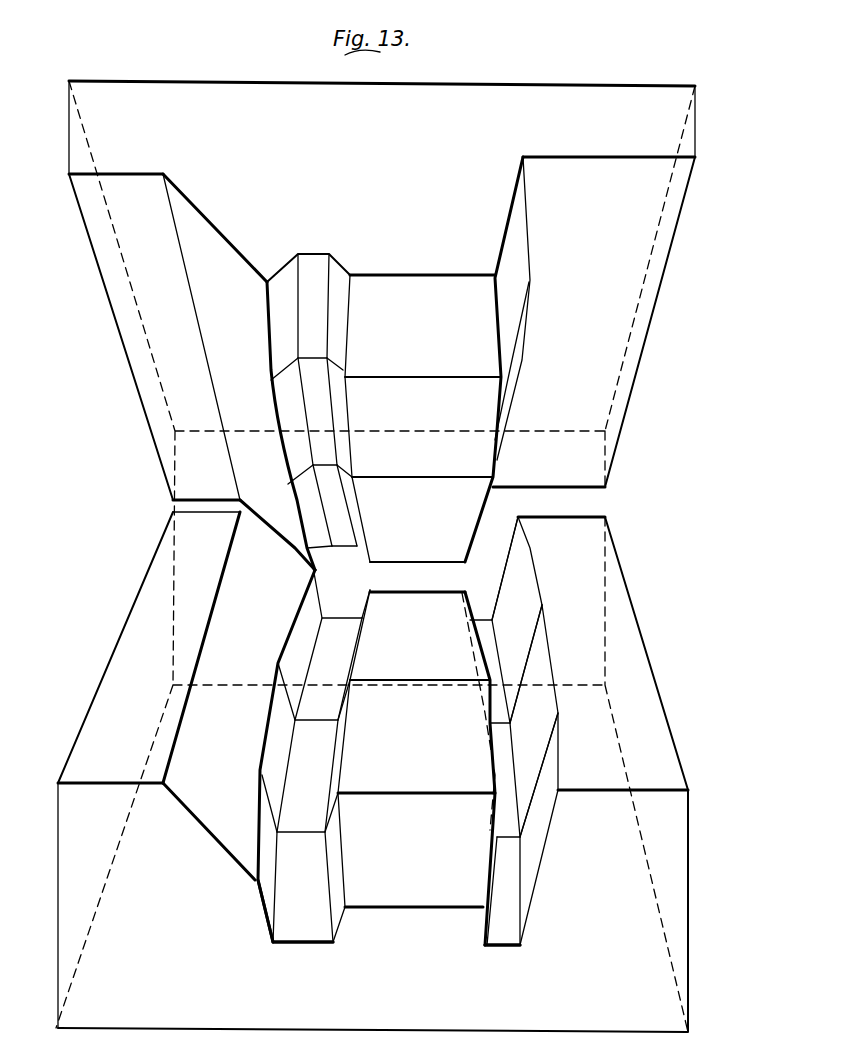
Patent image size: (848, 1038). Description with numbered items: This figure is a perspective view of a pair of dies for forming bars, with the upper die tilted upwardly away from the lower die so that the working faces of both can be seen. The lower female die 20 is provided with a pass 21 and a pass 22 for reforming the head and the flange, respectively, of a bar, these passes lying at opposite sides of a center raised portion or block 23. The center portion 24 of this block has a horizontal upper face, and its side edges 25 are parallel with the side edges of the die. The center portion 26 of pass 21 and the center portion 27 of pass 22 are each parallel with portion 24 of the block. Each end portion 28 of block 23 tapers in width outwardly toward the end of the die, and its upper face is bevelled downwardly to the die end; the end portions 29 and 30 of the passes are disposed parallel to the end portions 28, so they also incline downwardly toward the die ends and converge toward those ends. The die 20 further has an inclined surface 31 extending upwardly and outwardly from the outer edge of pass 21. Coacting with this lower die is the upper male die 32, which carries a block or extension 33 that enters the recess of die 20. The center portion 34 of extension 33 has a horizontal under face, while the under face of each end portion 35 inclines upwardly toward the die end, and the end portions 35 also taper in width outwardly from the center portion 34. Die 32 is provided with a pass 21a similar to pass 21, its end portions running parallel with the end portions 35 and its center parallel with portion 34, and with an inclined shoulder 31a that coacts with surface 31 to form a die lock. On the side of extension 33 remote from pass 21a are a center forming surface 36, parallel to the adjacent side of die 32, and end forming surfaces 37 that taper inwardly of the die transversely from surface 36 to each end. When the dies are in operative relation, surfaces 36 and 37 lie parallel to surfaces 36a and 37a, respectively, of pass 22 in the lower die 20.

The lower female die 20 is at (642, 663).
The pass 21 is at (335, 626).
The pass 21a is at (313, 268).
The pass 22 is at (483, 606).
The center raised portion or block 23 is at (420, 918).
The center portion of block 24 is at (420, 720).
The side edges 25 is at (340, 772).
The center portion of pass 26 is at (270, 740).
The center portion of pass 27 is at (500, 784).
The end portion of block 28 is at (416, 731).
The end portion of pass 29 is at (287, 912).
The end portion of pass 30 is at (516, 943).
The inclined surface 31 is at (223, 647).
The inclined shoulder 31a is at (218, 253).
The upper male die 32 is at (292, 96).
The block or extension 33 is at (401, 263).
The center portion of extension 34 is at (422, 440).
The end portion of extension 35 is at (422, 418).
The center forming surface 36 is at (516, 368).
The surface of pass 36a is at (542, 666).
The end forming surface 37 is at (521, 248).
The surface of pass 37a is at (524, 584).